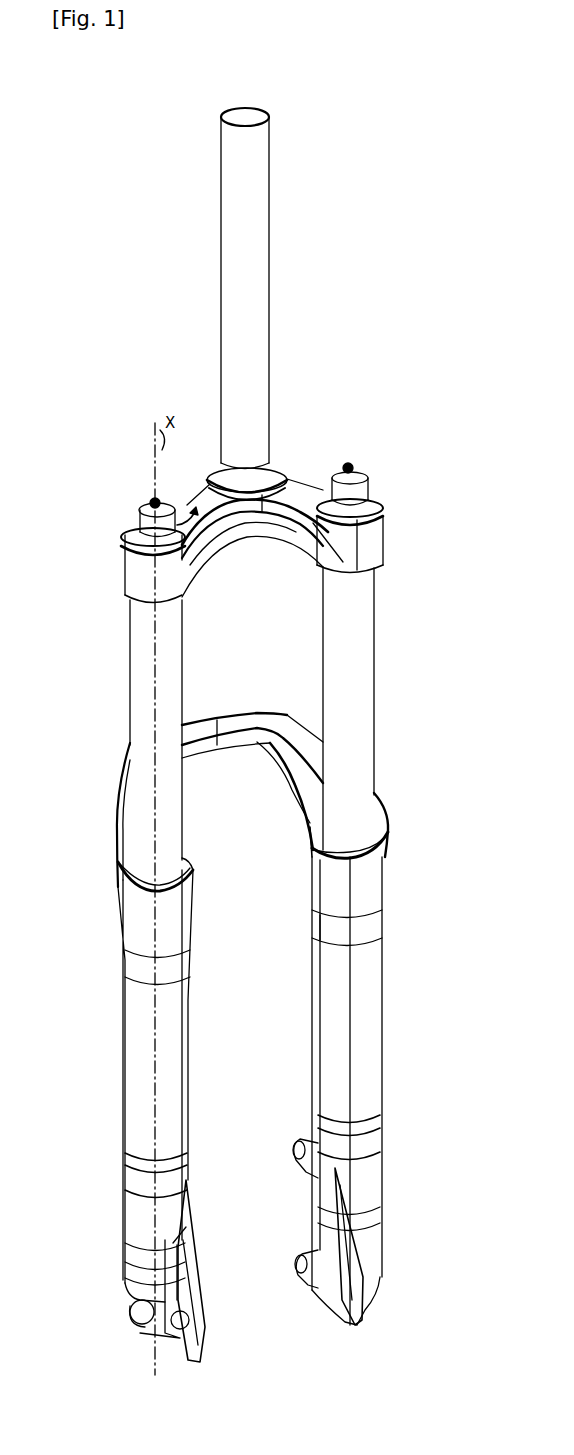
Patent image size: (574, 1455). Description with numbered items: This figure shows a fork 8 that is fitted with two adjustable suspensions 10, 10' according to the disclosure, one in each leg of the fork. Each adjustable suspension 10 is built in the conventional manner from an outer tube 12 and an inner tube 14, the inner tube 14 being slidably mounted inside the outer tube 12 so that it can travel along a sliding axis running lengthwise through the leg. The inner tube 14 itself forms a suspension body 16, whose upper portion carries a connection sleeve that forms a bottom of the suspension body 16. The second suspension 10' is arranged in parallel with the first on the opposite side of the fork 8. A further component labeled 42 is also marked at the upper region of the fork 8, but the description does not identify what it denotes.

The fork 8 is at (168, 322).
The adjustable suspension 10 is at (182, 730).
The adjustable suspension 10' is at (378, 708).
The outer tube 12 is at (168, 1064).
The inner tube 14 is at (172, 828).
The suspension body 16 is at (172, 770).
The crown with top caps 42 is at (153, 498).